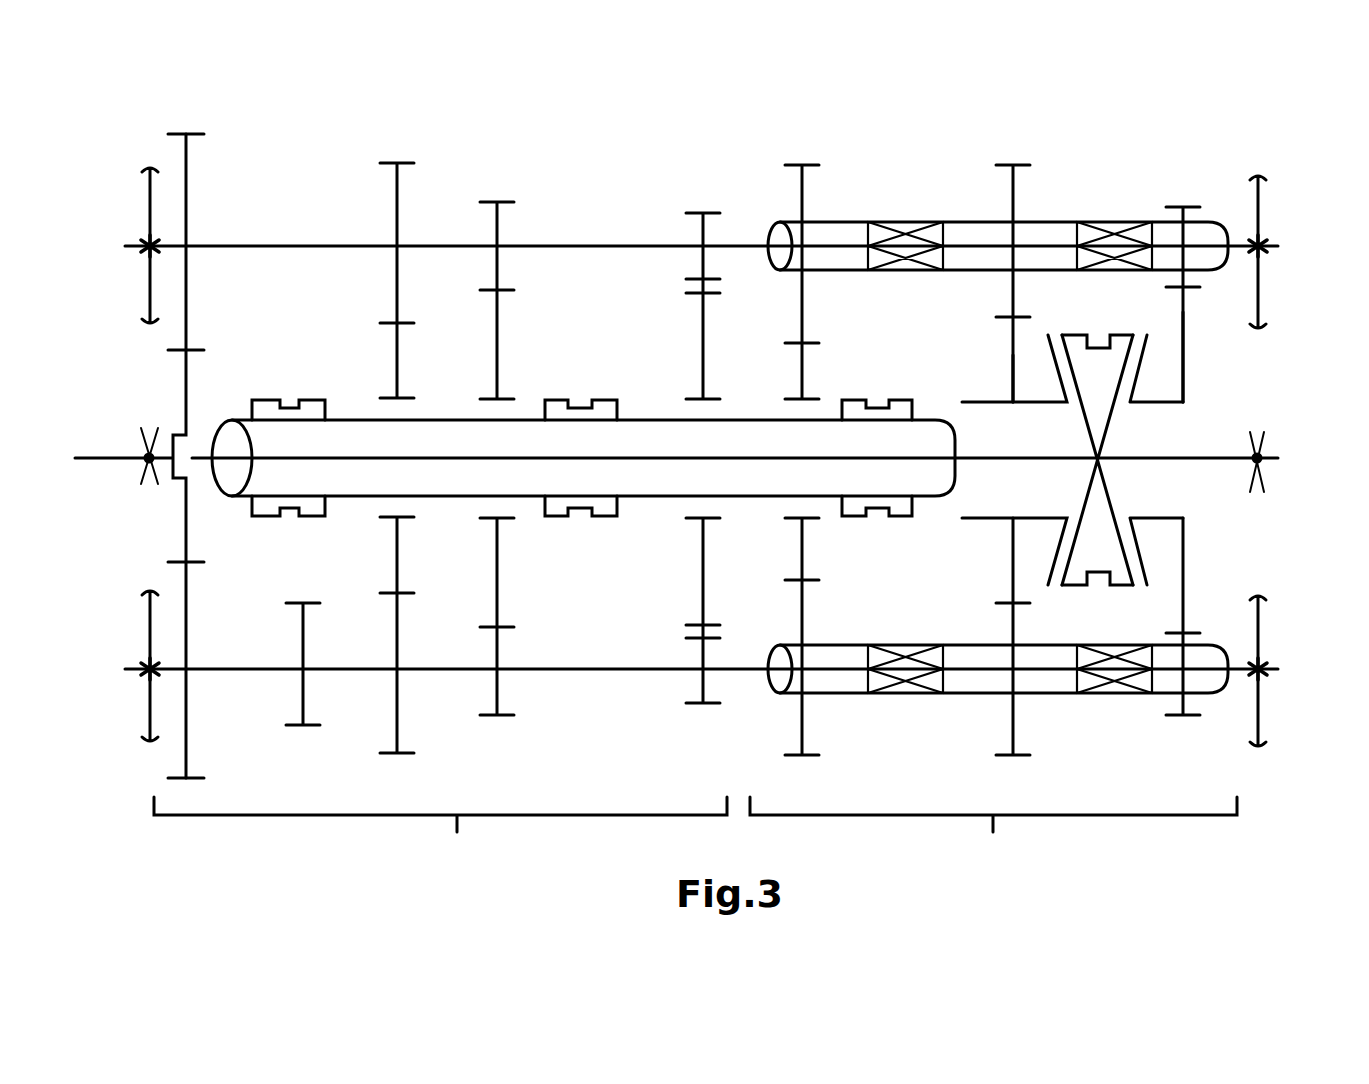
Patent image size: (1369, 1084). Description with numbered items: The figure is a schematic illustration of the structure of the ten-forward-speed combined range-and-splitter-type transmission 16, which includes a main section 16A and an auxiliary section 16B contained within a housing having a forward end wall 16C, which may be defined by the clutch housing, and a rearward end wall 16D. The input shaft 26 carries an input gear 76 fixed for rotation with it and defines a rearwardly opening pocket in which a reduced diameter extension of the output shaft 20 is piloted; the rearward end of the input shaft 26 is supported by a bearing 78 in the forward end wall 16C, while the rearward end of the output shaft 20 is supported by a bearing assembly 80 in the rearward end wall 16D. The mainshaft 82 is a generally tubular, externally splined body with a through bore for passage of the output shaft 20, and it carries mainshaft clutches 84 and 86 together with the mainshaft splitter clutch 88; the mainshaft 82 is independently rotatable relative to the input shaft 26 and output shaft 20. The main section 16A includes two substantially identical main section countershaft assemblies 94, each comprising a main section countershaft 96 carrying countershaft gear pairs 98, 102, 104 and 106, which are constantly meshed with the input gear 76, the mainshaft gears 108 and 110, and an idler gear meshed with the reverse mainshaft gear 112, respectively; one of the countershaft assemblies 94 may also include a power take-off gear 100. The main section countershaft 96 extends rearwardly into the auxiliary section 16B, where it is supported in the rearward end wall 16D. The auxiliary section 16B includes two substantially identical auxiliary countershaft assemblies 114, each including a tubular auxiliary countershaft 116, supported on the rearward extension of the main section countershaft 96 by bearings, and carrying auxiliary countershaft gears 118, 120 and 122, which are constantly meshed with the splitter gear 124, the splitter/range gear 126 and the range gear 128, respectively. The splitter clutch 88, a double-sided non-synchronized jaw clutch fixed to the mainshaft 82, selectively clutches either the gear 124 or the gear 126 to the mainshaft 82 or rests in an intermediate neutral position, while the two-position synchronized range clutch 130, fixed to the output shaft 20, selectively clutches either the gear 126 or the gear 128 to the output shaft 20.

The transmission 16 is at (933, 142).
The main section 16A is at (440, 832).
The auxiliary section 16B is at (993, 832).
The forward end wall 16C is at (150, 295).
The rearward end wall 16D is at (1258, 207).
The output shaft 20 is at (1212, 458).
The input shaft 26 is at (108, 462).
The input gear 76 is at (180, 398).
The bearing 78 is at (150, 478).
The bearing assembly 80 is at (1258, 482).
The mainshaft 82 is at (445, 410).
The mainshaft clutch 84 is at (288, 400).
The mainshaft clutch 86 is at (582, 400).
The mainshaft splitter clutch 88 is at (885, 398).
The main section countershaft assembly 94 is at (598, 206).
The main section countershaft 96 is at (447, 670).
The countershaft gear pair 98 is at (188, 206).
The power take-off gear 100 is at (305, 632).
The countershaft gear pair 102 is at (397, 222).
The countershaft gear pair 104 is at (493, 226).
The countershaft gear pair 106 is at (700, 228).
The mainshaft gear 108 is at (397, 356).
The mainshaft gear 110 is at (498, 352).
The reverse mainshaft gear 112 is at (703, 356).
The auxiliary countershaft assembly 114 is at (1117, 172).
The auxiliary countershaft 116 is at (968, 222).
The auxiliary countershaft gear 118 is at (803, 192).
The auxiliary countershaft gear 120 is at (1013, 198).
The auxiliary countershaft gear 122 is at (1192, 213).
The splitter gear 124 is at (808, 350).
The splitter/range gear 126 is at (140, 677).
The range gear 128 is at (1183, 312).
The synchronized range clutch 130 is at (1100, 513).